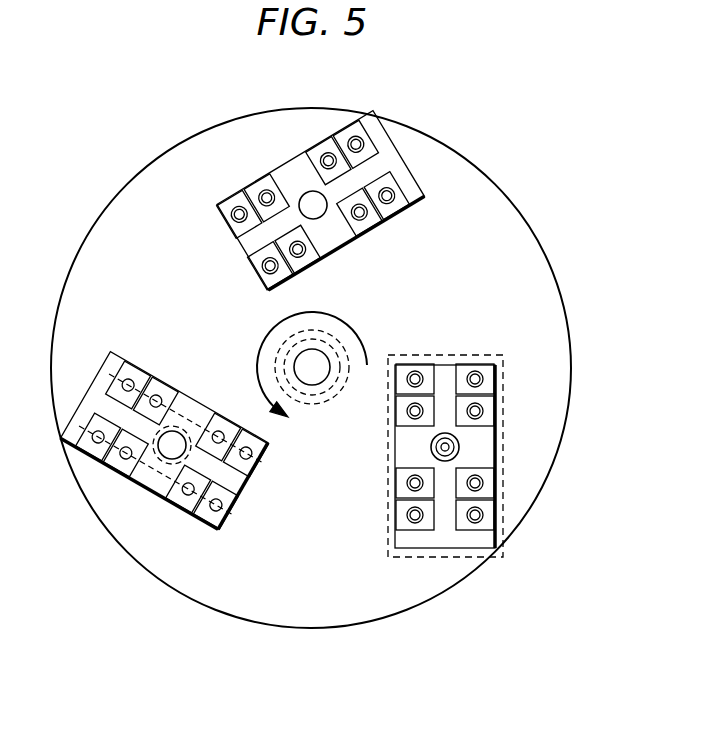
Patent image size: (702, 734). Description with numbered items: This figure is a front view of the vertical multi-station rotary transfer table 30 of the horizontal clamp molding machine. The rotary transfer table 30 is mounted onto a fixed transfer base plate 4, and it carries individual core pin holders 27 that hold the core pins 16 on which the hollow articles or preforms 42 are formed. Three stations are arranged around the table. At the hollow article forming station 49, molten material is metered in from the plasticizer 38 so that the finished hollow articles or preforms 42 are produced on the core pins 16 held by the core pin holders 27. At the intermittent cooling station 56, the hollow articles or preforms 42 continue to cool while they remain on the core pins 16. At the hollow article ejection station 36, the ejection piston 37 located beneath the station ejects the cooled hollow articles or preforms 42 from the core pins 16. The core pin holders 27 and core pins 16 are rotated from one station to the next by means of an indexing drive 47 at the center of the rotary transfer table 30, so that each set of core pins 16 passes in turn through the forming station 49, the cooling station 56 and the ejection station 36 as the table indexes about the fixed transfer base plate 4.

The fixed transfer base plate 4 is at (517, 262).
The vertical multi-station rotary transfer table 30 is at (491, 228).
The indexing drive 47 is at (336, 343).
The intermittent cooling station 56 is at (388, 160).
The core pin holder 27 is at (228, 204).
The core pin 16 is at (266, 197).
The hollow article or preform 42 is at (327, 152).
The hollow article ejection station 36 is at (220, 531).
The ejection piston 37 is at (186, 428).
The hollow article forming station 49 is at (445, 556).
The plasticizer 38 is at (441, 447).